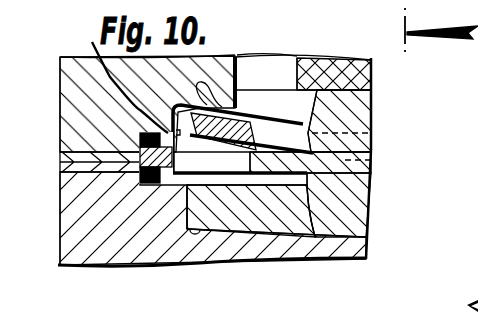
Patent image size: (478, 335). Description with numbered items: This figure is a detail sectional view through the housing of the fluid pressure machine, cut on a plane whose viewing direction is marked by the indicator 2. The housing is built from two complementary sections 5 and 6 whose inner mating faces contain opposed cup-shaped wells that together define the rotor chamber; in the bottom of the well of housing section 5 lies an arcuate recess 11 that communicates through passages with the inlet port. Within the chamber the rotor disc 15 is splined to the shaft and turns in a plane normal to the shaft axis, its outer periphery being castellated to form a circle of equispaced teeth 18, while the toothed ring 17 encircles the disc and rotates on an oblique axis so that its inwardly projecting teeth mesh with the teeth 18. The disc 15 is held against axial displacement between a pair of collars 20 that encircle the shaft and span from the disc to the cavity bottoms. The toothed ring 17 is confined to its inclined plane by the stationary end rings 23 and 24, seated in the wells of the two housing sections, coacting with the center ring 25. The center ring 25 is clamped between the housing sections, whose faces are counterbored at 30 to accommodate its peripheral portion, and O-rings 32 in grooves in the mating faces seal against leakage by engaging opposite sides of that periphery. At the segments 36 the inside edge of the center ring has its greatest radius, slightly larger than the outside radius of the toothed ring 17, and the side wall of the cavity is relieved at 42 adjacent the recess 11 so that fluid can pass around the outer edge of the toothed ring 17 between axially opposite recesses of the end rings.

The viewing direction indicator 2 is at (426, 33).
The housing section 5 is at (62, 80).
The housing section 6 is at (72, 237).
The arcuate recess 11 is at (278, 65).
The disc 15 is at (363, 166).
The ring 17 is at (200, 105).
The teeth 18 is at (283, 172).
The collars 20 is at (373, 117).
The end ring 23 is at (312, 92).
The end ring 24 is at (231, 217).
The center ring 25 is at (140, 150).
The counterbore 30 is at (140, 180).
The O-rings 32 is at (140, 140).
The segments 36 is at (176, 160).
The relieved side wall portion 42 is at (112, 84).